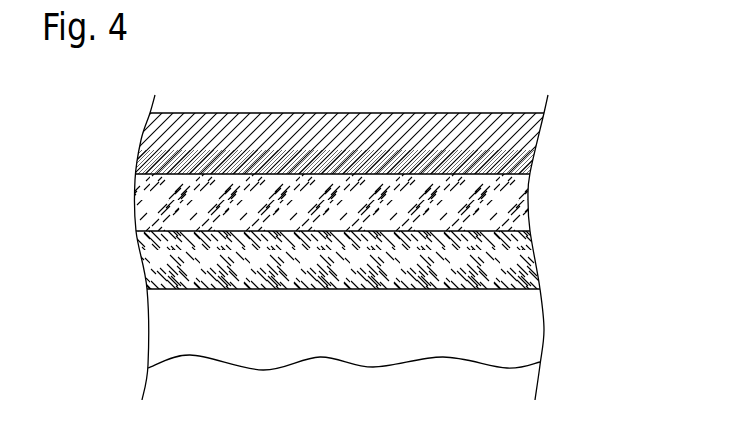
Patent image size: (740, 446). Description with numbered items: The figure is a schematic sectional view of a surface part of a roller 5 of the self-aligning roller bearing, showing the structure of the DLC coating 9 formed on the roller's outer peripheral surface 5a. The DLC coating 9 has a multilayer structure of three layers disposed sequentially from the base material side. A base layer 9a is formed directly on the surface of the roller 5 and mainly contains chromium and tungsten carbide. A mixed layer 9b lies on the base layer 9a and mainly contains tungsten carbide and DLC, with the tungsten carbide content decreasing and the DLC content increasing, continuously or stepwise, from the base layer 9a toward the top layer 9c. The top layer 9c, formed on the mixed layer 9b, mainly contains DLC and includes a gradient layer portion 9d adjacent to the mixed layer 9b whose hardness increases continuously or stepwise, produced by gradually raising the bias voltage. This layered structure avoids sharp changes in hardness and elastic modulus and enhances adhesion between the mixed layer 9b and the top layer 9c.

The roller 5 is at (522, 332).
The surface of substrate 5a is at (220, 291).
The DLC coating 9 is at (369, 201).
The base layer 9a is at (377, 256).
The mixed layer 9b is at (518, 203).
The top layer 9c is at (522, 133).
The gradient layer portion 9d is at (165, 163).